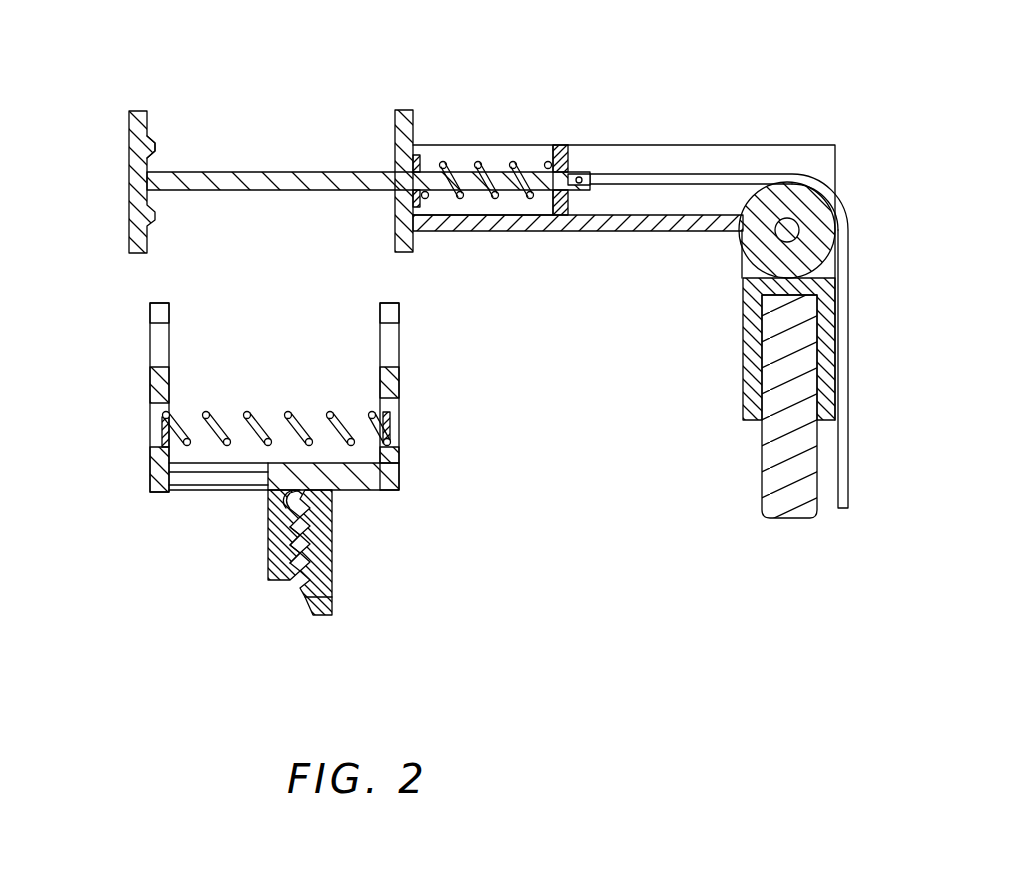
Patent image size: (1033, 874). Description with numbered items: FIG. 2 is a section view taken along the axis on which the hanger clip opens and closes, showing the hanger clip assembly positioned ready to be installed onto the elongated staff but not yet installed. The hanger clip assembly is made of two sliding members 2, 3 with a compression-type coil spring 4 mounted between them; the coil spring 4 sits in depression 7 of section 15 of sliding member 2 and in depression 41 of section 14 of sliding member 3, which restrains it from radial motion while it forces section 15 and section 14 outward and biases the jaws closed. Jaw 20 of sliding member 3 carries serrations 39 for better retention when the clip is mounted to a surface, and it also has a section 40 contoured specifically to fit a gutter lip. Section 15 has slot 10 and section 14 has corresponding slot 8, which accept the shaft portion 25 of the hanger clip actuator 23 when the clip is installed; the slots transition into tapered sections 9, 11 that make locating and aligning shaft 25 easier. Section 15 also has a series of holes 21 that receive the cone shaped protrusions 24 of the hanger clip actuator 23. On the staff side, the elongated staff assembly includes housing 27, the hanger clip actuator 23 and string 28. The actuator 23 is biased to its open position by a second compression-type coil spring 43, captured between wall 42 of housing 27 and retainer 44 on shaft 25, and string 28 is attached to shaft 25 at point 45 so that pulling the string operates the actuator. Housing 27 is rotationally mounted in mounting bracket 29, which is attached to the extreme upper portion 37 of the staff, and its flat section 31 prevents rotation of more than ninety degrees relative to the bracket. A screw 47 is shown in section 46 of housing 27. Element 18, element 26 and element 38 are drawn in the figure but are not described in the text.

The sliding member 2 is at (335, 567).
The sliding member 3 is at (400, 478).
The compression-type coil spring 4 is at (206, 414).
The depression 7 is at (162, 428).
The slot 8 is at (392, 340).
The tapered section 9 is at (386, 313).
The slot 10 is at (160, 346).
The tapered section 11 is at (160, 312).
The section 14 is at (400, 380).
The section 15 is at (155, 476).
The screw tip 18 is at (334, 605).
The jaw 20 is at (268, 578).
The holes 21 is at (155, 388).
The hanger clip actuator 23 is at (132, 110).
The cone shaped protrusions 24 is at (151, 140).
The shaft portion 25 is at (232, 172).
The flange 26 is at (401, 110).
The housing 27 is at (510, 145).
The string 28 is at (698, 173).
The mounting bracket 29 is at (745, 310).
The flat section 31 is at (836, 160).
The extreme upper portion 37 is at (762, 430).
The plate 38 is at (195, 484).
The serrations 39 is at (292, 553).
The section 40 is at (280, 508).
The depression 41 is at (392, 424).
The wall 42 is at (568, 152).
The compression-type coil spring 43 is at (443, 163).
The retainer 44 is at (418, 200).
The point 45 is at (580, 190).
The section 46 is at (745, 262).
The screw 47 is at (825, 207).